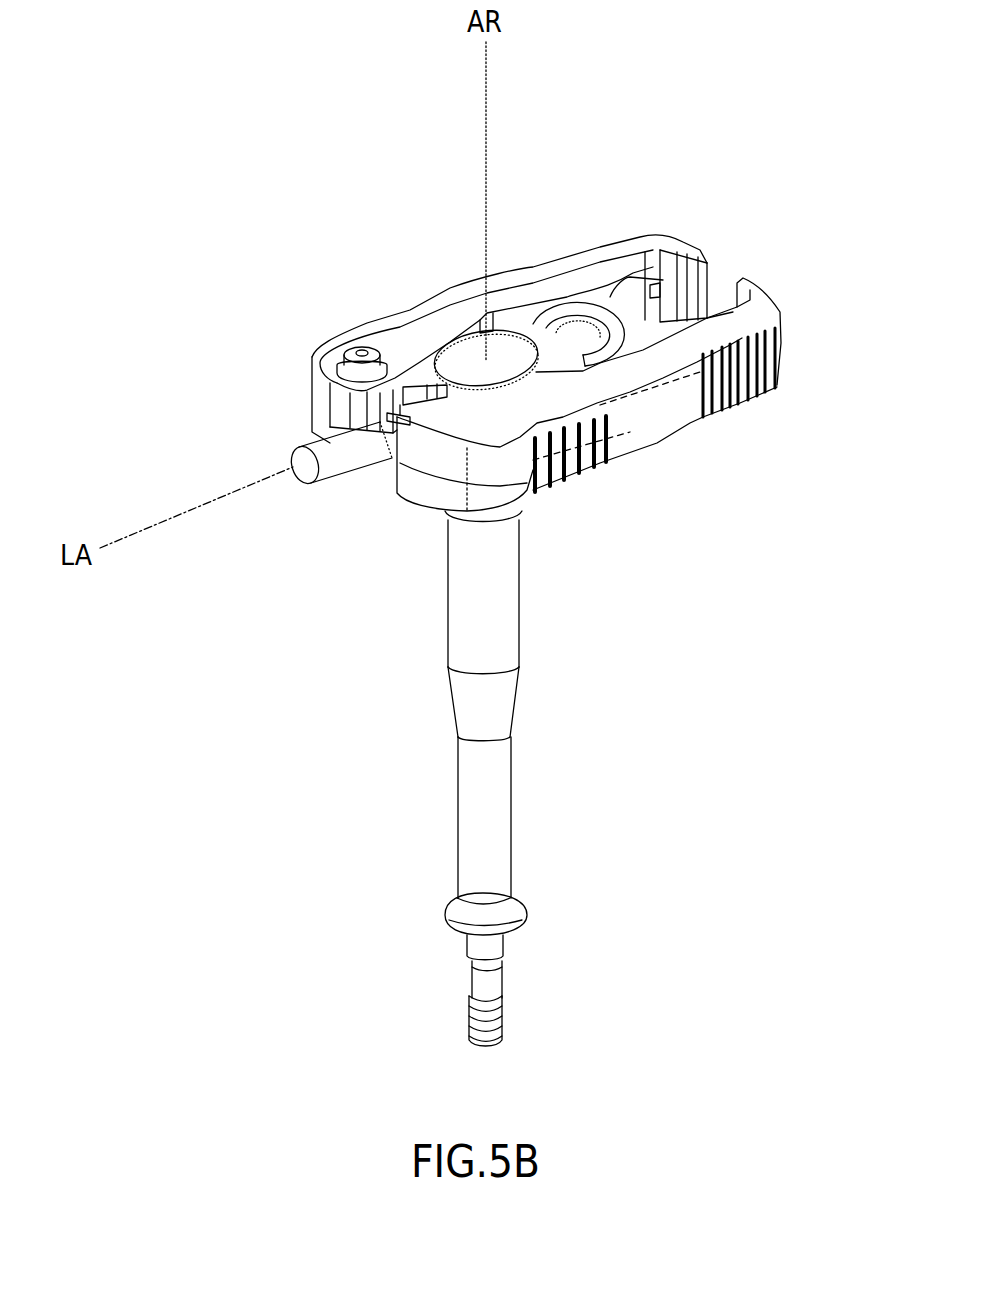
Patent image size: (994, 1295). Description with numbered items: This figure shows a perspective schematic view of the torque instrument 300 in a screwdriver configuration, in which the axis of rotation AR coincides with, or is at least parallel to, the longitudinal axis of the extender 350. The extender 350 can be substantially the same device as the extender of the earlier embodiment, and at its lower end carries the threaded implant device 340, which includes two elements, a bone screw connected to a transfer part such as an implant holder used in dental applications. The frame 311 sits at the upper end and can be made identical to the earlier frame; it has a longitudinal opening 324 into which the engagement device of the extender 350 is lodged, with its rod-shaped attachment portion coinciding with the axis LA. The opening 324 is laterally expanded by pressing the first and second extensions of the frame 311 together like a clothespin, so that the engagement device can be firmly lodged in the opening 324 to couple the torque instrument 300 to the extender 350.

The torque instrument 300 is at (432, 275).
The longitudinal opening 324 is at (549, 300).
The frame 311 is at (605, 238).
The extender 350 is at (534, 699).
The threaded implant device 340 is at (517, 1015).